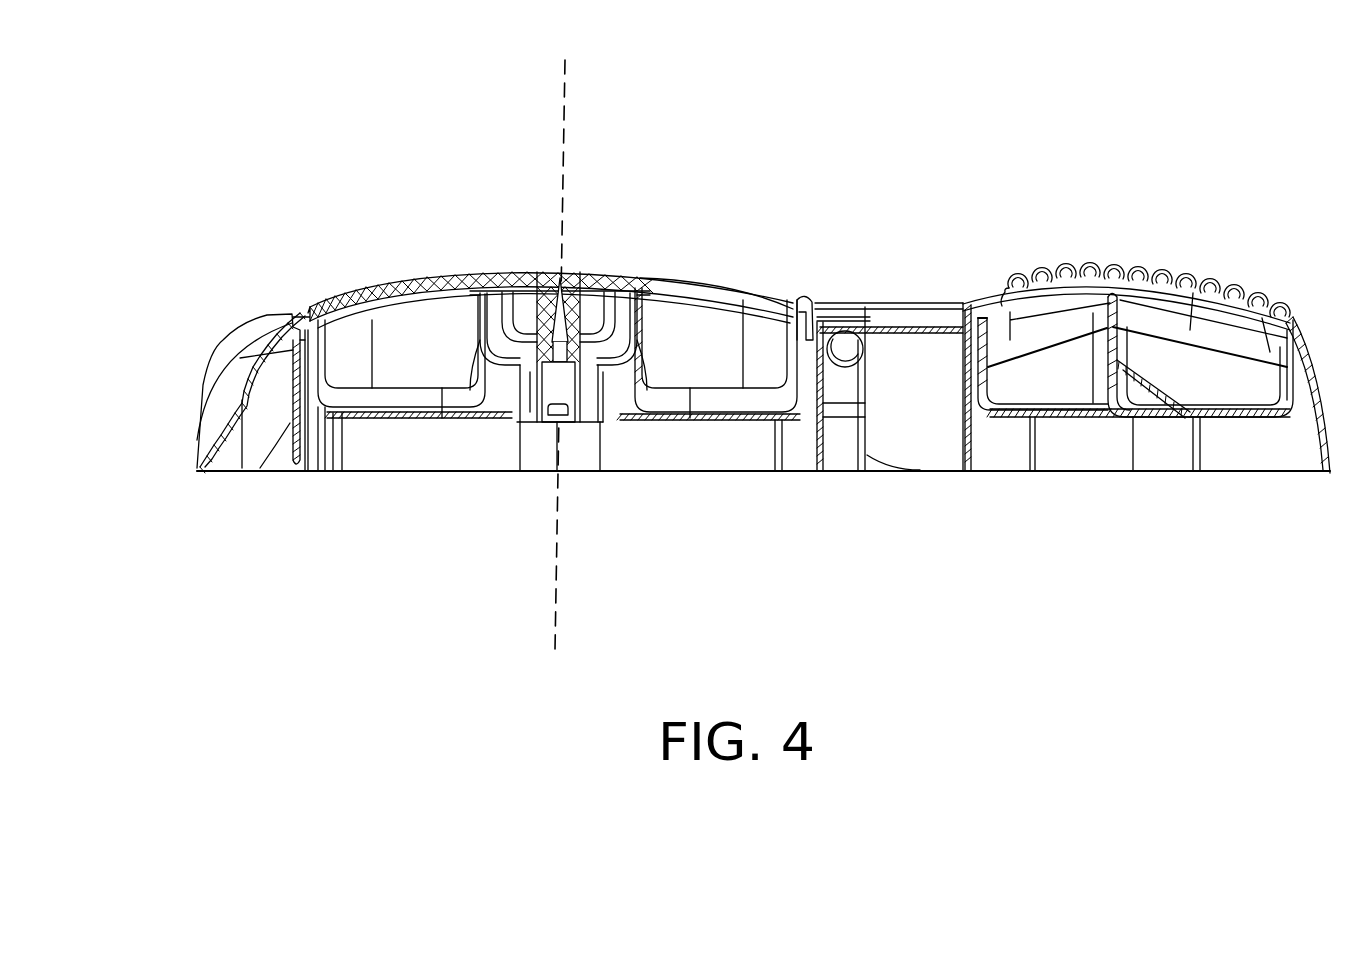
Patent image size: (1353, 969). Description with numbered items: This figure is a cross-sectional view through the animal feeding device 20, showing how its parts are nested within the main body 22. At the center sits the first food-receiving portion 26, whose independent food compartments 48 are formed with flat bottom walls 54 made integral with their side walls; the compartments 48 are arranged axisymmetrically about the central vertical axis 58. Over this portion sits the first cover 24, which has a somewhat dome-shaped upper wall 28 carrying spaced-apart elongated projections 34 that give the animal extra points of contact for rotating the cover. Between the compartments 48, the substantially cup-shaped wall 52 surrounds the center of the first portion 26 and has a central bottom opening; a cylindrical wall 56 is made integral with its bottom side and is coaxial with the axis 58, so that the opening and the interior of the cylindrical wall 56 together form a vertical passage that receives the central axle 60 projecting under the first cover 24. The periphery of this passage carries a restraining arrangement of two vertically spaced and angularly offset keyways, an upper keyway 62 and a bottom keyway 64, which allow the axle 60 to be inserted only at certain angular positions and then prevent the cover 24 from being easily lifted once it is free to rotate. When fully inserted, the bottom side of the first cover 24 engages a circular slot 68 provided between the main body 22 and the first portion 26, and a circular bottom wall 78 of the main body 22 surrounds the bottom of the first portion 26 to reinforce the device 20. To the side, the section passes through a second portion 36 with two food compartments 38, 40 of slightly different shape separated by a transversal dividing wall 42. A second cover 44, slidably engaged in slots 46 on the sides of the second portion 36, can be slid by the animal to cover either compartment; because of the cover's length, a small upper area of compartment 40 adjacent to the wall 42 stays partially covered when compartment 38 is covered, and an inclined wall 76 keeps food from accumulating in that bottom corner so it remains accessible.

The device 20 is at (850, 132).
The main body 22 is at (240, 322).
The first cover 24 is at (497, 272).
The first food-receiving portion 26 is at (521, 452).
The dome-shaped upper wall 28 is at (528, 270).
The elongated projections 34 is at (402, 268).
The second portion 36 is at (1182, 238).
The food compartment 38 is at (1027, 390).
The food compartment 40 is at (1225, 387).
The transversal dividing wall 42 is at (1120, 350).
The second cover 44 is at (1238, 290).
The slots 46 is at (1092, 330).
The food compartments 48 is at (410, 372).
The cup-shaped wall 52 is at (675, 322).
The flat bottom wall 54 is at (442, 418).
The cylindrical wall 56 is at (690, 413).
The central vertical axis 58 is at (568, 98).
The central axle 60 is at (637, 370).
The upper keyway 62 is at (505, 388).
The bottom keyway 64 is at (505, 425).
The circular slot 68 is at (304, 473).
The inclined wall 76 is at (1143, 400).
The circular bottom wall 78 is at (262, 471).